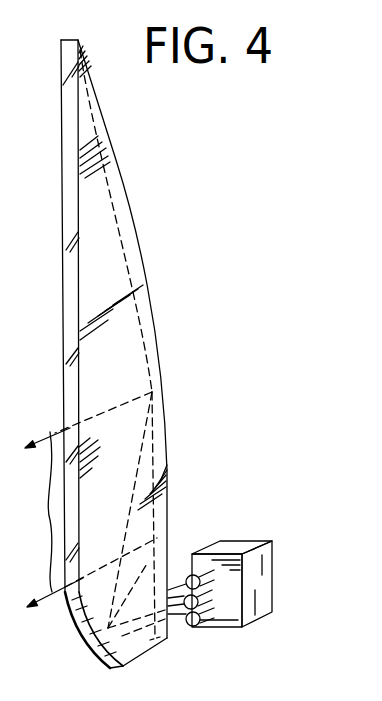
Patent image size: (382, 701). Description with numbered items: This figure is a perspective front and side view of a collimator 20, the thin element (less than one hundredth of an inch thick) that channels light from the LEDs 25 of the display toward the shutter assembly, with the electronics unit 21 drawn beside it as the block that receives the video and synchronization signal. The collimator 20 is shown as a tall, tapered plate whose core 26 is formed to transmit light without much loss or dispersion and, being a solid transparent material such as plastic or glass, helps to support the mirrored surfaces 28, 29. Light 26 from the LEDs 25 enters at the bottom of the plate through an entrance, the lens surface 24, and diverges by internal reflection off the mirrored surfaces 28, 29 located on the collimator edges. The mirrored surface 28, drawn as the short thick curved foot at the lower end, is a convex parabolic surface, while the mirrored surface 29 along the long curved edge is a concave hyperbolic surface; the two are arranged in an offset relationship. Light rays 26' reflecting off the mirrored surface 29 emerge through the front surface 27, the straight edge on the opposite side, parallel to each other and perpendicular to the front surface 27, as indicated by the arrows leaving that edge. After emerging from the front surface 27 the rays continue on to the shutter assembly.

The collimator 20 is at (165, 262).
The electronics unit 21 is at (237, 552).
The lens surface 24 is at (167, 548).
The LEDs 25 is at (203, 628).
The core 26 is at (89, 367).
The light rays 26' is at (48, 517).
The front surface 27 is at (63, 180).
The mirrored surface 28 is at (82, 610).
The mirrored surface 29 is at (121, 158).